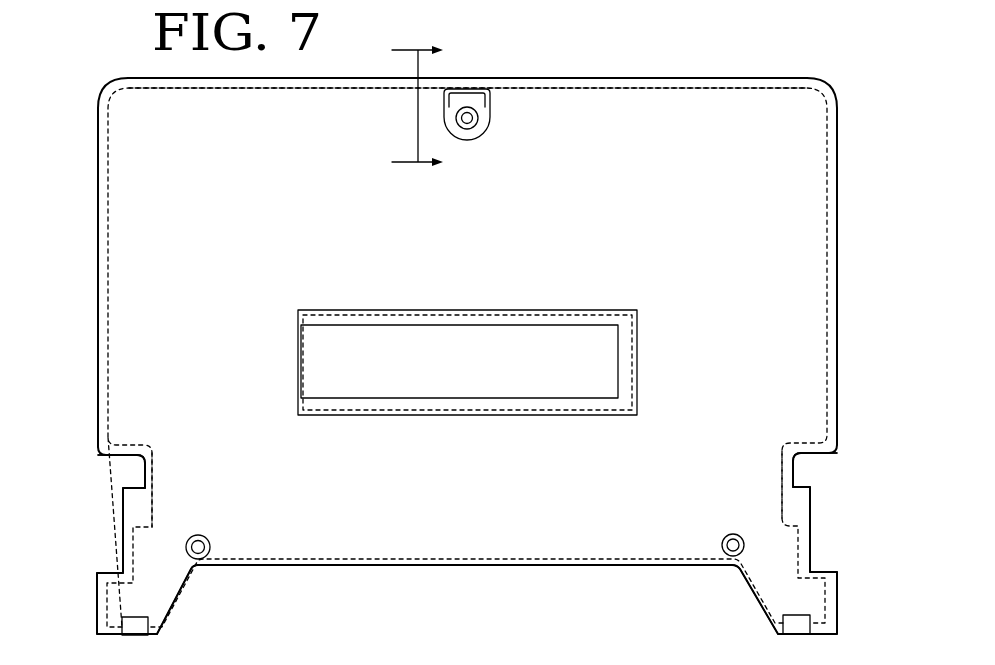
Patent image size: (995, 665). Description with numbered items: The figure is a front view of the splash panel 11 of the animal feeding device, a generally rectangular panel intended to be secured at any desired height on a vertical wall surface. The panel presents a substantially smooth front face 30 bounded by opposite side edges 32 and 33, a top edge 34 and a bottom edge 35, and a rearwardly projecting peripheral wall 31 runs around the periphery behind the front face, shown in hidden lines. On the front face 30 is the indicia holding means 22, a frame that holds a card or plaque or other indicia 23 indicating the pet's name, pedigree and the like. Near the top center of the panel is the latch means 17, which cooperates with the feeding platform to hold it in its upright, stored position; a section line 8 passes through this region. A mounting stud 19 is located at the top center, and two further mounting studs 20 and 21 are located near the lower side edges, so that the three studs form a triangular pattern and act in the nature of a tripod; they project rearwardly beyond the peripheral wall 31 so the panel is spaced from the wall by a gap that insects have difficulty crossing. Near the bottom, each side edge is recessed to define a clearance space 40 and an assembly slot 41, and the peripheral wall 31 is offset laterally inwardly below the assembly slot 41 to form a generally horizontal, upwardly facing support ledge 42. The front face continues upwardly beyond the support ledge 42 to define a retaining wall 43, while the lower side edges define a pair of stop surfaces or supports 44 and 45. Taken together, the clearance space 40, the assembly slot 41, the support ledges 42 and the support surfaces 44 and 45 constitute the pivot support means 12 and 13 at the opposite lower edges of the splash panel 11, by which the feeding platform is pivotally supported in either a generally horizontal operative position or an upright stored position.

The section line 8- 8 is at (437, 110).
The splash panel 11 is at (832, 300).
The pivot support means 12 is at (96, 494).
The pivot support means 13 is at (828, 522).
The latch means 17 is at (490, 117).
The mounting stud 19 is at (468, 120).
The mounting stud 20 is at (203, 543).
The mounting stud 21 is at (735, 540).
The indicia holding means 22 is at (357, 310).
The indicia 23 is at (423, 390).
The front face 30 is at (178, 313).
The peripheral wall 31 is at (660, 88).
The side edge 32 is at (98, 340).
The side edge 33 is at (832, 350).
The top edge 34 is at (681, 78).
The bottom edge 35 is at (403, 566).
The clearance space 40 is at (124, 548).
The assembly slot 41 is at (140, 475).
The support ledge 42 is at (150, 498).
The retaining wall 43 is at (126, 508).
The stop surface 44 is at (157, 582).
The stop surface 45 is at (785, 565).